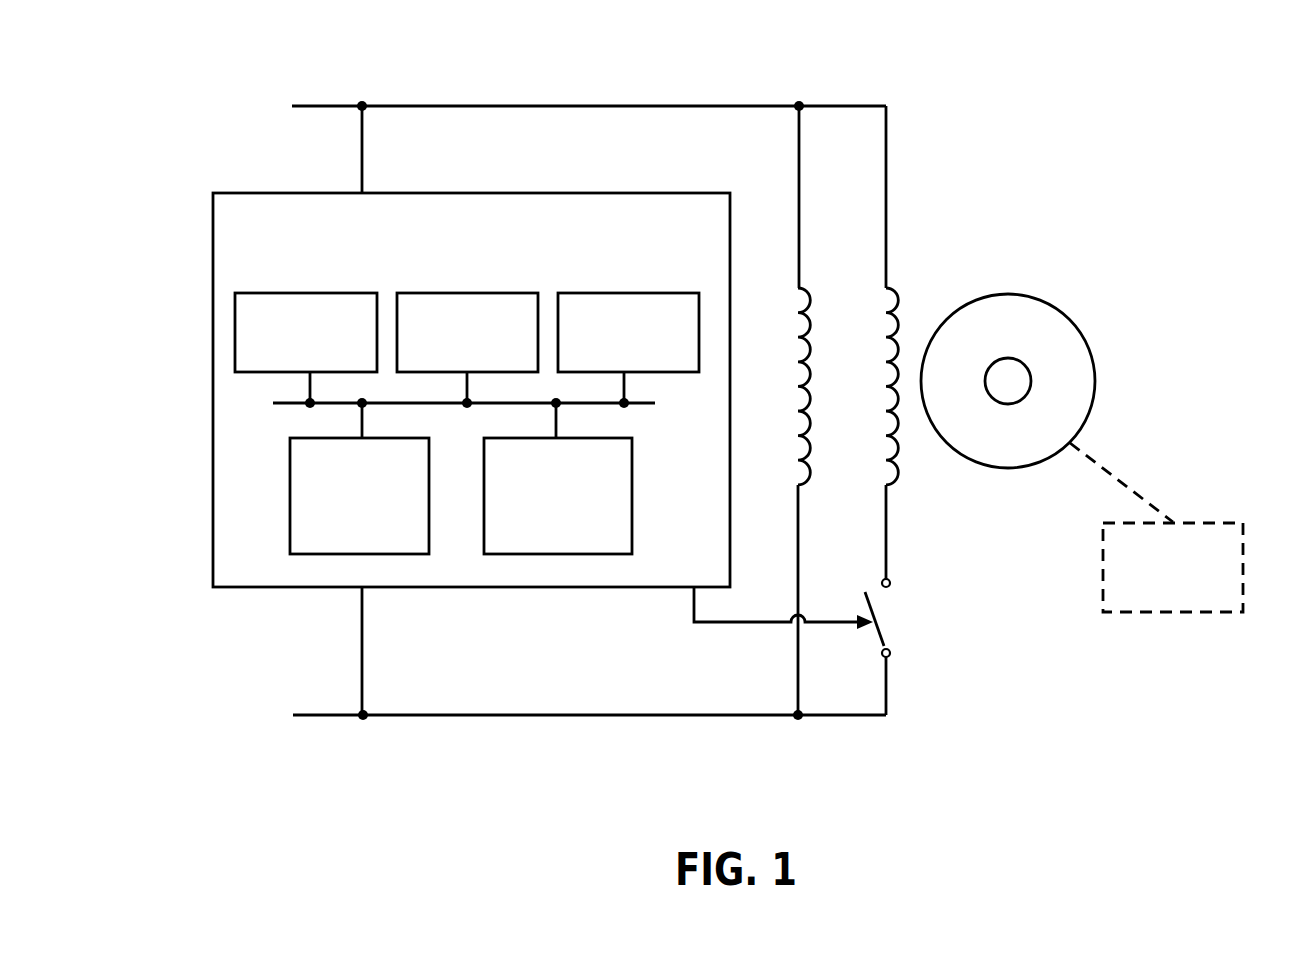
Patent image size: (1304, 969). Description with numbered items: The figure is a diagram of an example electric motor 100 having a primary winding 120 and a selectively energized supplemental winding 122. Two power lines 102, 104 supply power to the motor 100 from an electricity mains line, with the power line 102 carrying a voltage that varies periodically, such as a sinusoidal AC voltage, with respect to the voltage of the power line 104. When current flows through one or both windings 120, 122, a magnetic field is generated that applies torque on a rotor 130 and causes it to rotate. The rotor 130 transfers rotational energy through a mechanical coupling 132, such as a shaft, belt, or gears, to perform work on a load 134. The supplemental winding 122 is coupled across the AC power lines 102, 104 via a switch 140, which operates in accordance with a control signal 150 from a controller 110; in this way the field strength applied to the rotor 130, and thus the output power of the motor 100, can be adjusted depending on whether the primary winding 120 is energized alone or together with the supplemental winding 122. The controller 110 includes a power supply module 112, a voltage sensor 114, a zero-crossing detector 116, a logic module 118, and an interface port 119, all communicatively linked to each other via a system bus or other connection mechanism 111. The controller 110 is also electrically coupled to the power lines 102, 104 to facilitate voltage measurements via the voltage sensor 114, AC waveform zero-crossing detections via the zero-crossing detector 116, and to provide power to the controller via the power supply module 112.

The electric motor 100 is at (1041, 67).
The power line 102 is at (331, 106).
The power line 104 is at (319, 716).
The controller 110 is at (448, 193).
The connection mechanism 111 is at (642, 403).
The power supply module 112 is at (285, 293).
The voltage sensor 114 is at (290, 492).
The zero-crossing detector 116 is at (632, 482).
The logic module 118 is at (428, 293).
The interface port 119 is at (593, 293).
The primary winding 120 is at (812, 302).
The supplemental winding 122 is at (900, 302).
The rotor 130 is at (1090, 353).
The mechanical coupling 132 is at (1103, 470).
The load 134 is at (1103, 582).
The switch 140 is at (880, 627).
The control signal 150 is at (735, 622).